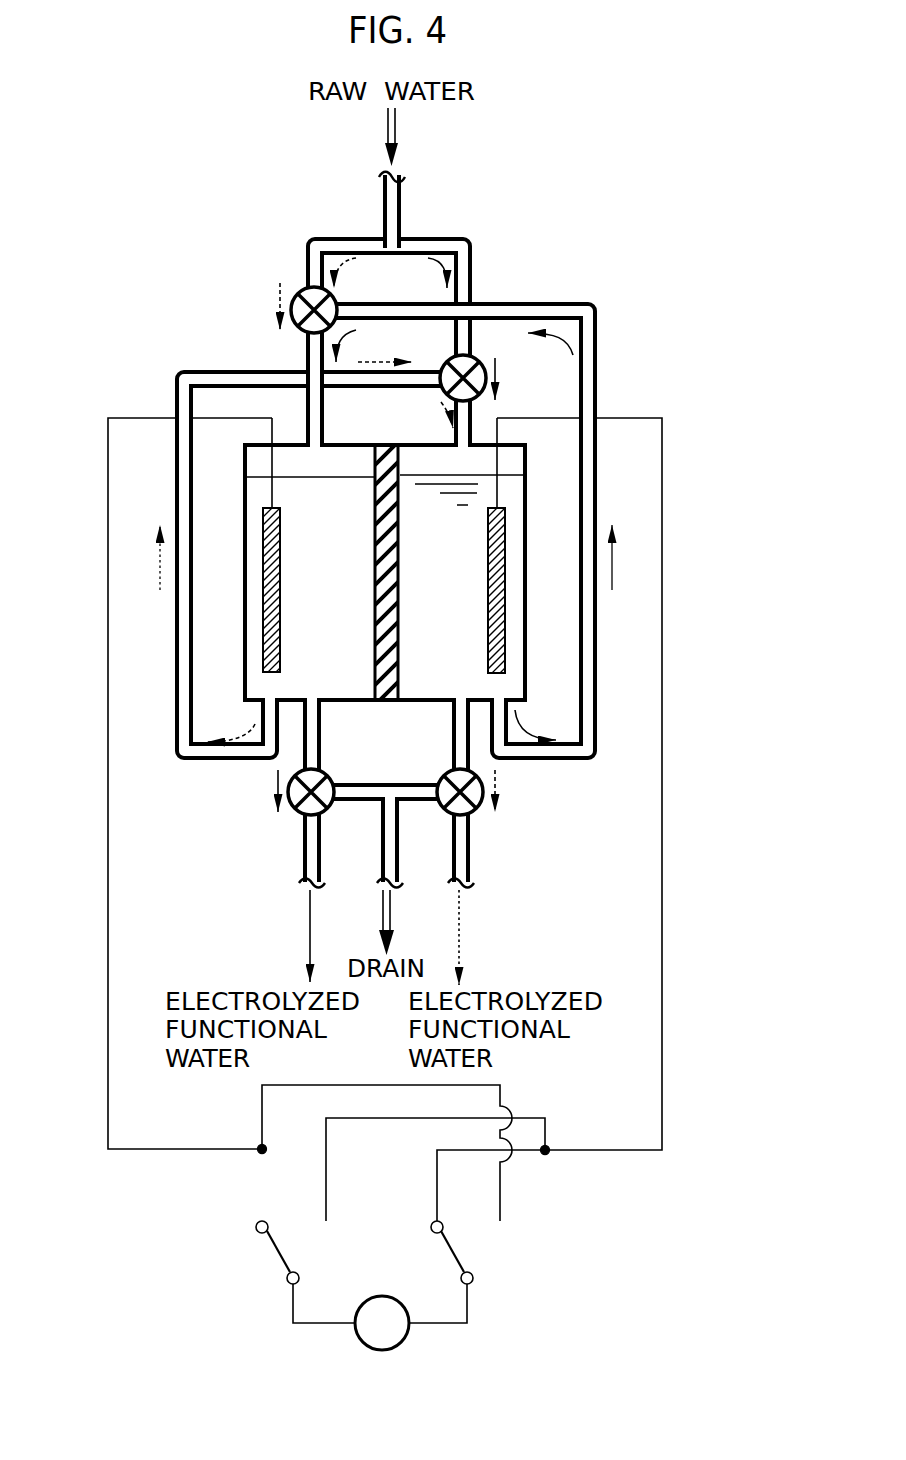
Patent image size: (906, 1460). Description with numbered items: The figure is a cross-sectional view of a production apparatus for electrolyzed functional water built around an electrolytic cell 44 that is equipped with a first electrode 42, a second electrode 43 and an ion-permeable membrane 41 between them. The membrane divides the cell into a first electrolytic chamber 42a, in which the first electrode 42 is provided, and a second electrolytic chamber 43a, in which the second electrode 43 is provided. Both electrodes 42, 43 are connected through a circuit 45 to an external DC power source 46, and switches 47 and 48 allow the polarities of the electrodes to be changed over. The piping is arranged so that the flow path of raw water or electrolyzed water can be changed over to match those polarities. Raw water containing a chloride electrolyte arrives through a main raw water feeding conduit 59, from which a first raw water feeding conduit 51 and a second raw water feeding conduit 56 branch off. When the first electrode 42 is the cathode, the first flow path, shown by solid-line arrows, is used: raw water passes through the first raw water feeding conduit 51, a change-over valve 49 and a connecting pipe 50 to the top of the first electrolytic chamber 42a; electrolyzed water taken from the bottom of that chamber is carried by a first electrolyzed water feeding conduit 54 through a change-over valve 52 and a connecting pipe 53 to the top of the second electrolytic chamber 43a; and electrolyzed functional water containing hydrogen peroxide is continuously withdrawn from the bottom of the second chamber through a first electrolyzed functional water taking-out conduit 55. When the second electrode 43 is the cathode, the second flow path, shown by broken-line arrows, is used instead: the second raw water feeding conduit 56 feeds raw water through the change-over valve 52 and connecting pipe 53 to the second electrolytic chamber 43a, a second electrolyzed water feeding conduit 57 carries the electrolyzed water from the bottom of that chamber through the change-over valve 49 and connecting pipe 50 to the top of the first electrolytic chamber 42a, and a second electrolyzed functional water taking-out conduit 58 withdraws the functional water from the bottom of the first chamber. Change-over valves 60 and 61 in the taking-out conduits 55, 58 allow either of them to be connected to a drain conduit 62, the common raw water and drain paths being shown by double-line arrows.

The ion-permeable membrane 41 is at (402, 592).
The first electrode 42 is at (508, 590).
The second electrode 43 is at (263, 584).
The first electrolytic chamber 42a is at (424, 703).
The second electrolytic chamber 43a is at (345, 703).
The electrolytic cell 44 is at (459, 586).
The circuit 45 is at (106, 586).
The external DC power source 46 is at (405, 1338).
The switch 47 is at (278, 1249).
The switch 48 is at (462, 1258).
The change-over valve 49 is at (483, 366).
The connecting pipe 50 is at (445, 436).
The first raw water feeding conduit 51 is at (431, 240).
The change-over valve 52 is at (298, 292).
The connecting pipe 53 is at (325, 408).
The first electrolyzed water feeding conduit 54 is at (600, 376).
The first electrolyzed functional water taking-out conduit 55 is at (321, 863).
The second raw water feeding conduit 56 is at (346, 240).
The second electrolyzed water feeding conduit 57 is at (217, 370).
The second electrolyzed functional water taking-out conduit 58 is at (471, 862).
The main raw water feeding conduit 59 is at (403, 183).
The change-over valve 60 is at (297, 812).
The change-over valve 61 is at (478, 810).
The drain conduit 62 is at (398, 863).